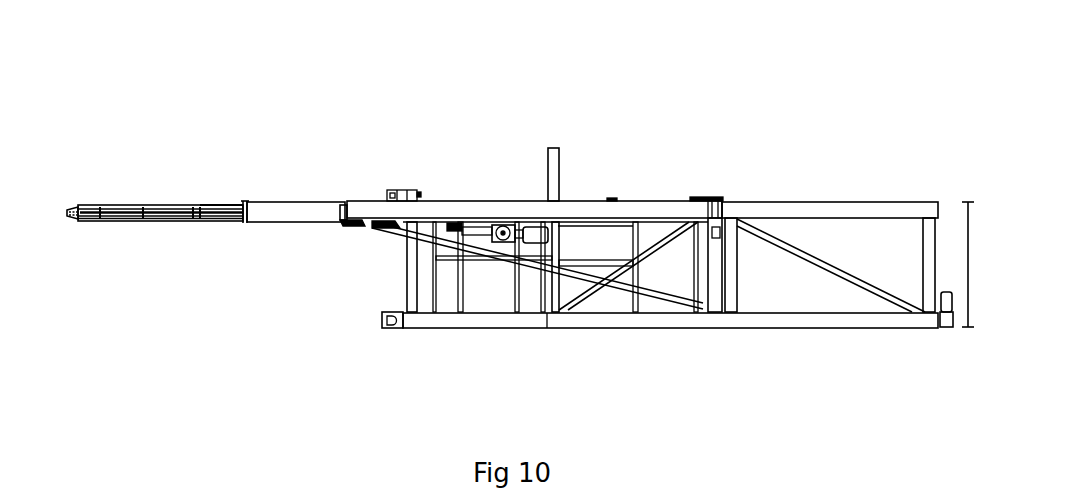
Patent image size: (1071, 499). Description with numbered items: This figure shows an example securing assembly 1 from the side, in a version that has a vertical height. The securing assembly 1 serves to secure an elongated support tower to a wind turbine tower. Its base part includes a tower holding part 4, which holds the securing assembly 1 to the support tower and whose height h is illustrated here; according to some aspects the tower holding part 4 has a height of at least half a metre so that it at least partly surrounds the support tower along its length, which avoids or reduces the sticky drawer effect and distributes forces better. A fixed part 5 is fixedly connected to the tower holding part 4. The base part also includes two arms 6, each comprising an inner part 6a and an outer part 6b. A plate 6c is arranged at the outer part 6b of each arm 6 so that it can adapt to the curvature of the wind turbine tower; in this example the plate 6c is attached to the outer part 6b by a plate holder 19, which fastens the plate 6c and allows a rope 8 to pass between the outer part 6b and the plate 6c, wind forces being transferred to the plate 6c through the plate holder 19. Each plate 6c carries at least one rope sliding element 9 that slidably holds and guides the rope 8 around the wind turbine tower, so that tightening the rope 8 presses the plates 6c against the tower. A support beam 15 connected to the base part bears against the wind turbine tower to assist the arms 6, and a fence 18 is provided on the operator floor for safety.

The securing assembly 1 is at (470, 130).
The tower holding part 4 is at (807, 203).
The fixed part 5 is at (694, 322).
The arm 6 is at (339, 152).
The inner part 6a is at (373, 193).
The outer part 6b is at (288, 192).
The plate 6c is at (160, 202).
The rope 8 is at (207, 207).
The rope sliding element 9 is at (193, 219).
The support beam 15 is at (387, 232).
The fence 18 is at (464, 264).
The plate holder 19 is at (238, 223).